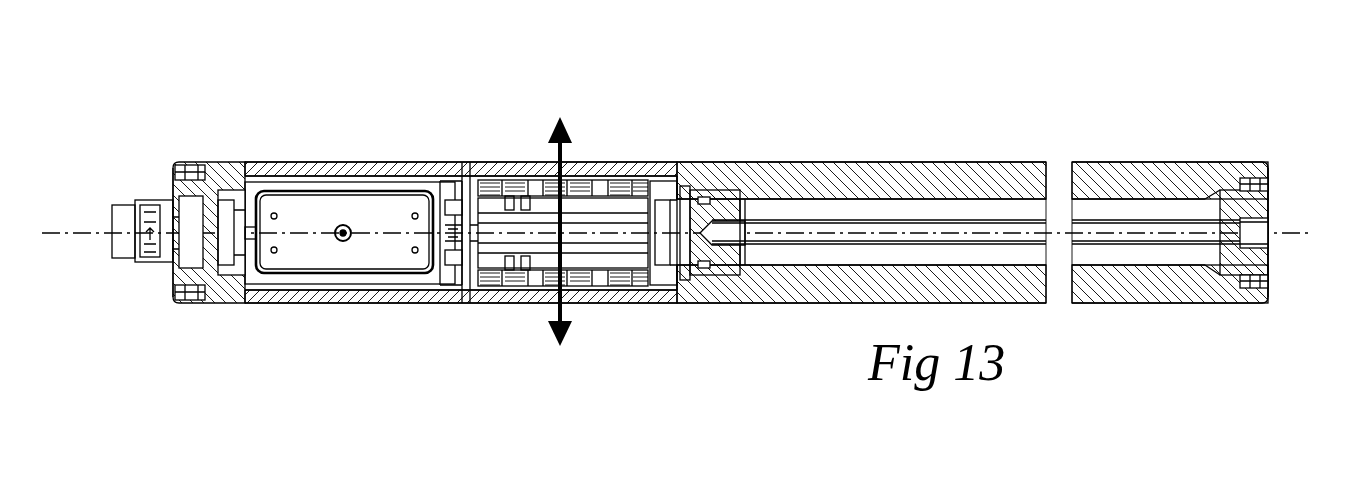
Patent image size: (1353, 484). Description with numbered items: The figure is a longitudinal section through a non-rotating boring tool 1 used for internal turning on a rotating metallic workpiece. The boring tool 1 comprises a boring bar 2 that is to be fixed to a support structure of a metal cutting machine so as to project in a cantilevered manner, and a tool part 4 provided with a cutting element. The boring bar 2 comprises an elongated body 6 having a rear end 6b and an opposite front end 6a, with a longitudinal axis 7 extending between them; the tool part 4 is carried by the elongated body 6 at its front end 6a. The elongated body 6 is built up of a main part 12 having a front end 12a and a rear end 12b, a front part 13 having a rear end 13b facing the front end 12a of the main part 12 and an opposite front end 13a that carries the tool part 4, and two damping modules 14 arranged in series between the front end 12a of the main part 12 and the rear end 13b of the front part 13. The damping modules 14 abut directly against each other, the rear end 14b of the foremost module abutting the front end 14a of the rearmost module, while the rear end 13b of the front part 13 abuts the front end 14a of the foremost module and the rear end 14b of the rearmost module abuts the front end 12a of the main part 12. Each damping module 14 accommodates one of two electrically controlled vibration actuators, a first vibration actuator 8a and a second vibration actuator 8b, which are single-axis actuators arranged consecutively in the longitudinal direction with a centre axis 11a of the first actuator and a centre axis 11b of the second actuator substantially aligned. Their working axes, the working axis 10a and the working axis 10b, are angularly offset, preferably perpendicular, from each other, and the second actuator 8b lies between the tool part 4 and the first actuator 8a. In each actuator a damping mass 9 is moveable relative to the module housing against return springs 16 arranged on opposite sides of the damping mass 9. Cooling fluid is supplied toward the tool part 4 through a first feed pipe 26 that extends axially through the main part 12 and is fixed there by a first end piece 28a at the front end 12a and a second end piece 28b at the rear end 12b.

The boring tool 1 is at (431, 106).
The boring bar 2 is at (909, 124).
The tool part 4 is at (170, 193).
The elongated body 6 is at (764, 318).
The front end 6a is at (184, 310).
The rear end 6b is at (1266, 312).
The longitudinal axis 7 is at (823, 230).
The first vibration actuator 8a is at (502, 164).
The second vibration actuator 8b is at (403, 270).
The damping mass 9 is at (368, 260).
The working axis 10a is at (564, 152).
The working axis 10b is at (338, 226).
The centre axis 11a is at (619, 228).
The centre axis 11b is at (294, 236).
The main part 12 is at (838, 168).
The front end 12a is at (673, 158).
The rear end 12b is at (1264, 153).
The front part 13 is at (221, 160).
The front end 13a is at (187, 160).
The rear end 13b is at (245, 160).
The damping module 14 is at (390, 300).
The front end 14a is at (248, 305).
The rear end 14b is at (461, 312).
The return springs 16 is at (532, 345).
The first feed pipe 26 is at (1135, 218).
The first end piece 28a is at (706, 260).
The second end piece 28b is at (1242, 264).